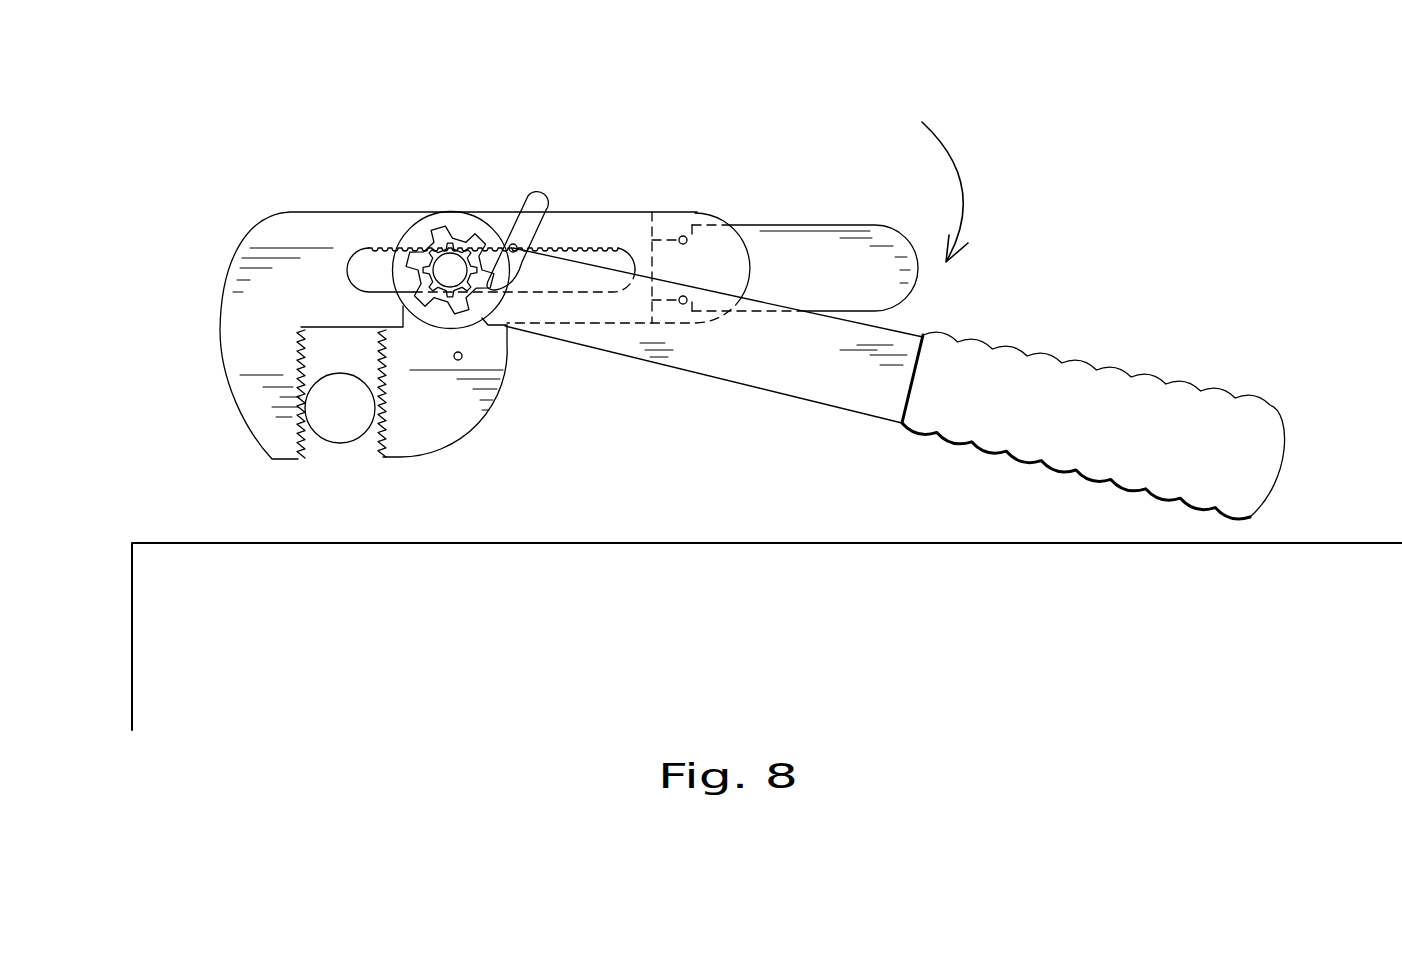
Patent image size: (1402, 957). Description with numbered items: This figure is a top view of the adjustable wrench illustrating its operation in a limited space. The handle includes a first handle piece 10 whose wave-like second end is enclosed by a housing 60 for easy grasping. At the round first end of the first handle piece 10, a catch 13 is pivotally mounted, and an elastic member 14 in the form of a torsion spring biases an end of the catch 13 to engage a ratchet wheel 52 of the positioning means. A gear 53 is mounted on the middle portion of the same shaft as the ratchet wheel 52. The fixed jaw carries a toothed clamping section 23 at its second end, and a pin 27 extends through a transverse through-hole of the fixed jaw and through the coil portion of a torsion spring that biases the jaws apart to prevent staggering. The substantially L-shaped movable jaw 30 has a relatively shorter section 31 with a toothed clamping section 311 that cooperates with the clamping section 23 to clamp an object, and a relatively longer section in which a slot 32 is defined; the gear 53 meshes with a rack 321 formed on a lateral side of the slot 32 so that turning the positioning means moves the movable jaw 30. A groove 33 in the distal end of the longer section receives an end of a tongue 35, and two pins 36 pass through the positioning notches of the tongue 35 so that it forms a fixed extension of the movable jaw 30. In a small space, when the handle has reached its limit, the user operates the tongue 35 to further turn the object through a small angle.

The first handle piece 10 is at (843, 393).
The catch 13 is at (537, 197).
The elastic member 14 is at (517, 257).
The clamping section 23 is at (383, 430).
The pin 27 is at (462, 360).
The movable jaw 30 is at (737, 180).
The relatively shorter section 31 is at (222, 300).
The clamping section 311 is at (296, 432).
The slot 32 is at (624, 245).
The rack 321 is at (582, 208).
The groove 33 is at (692, 313).
The tongue 35 is at (869, 240).
The pins 36 is at (682, 236).
The ratchet wheel 52 is at (436, 228).
The gear 53 is at (386, 212).
The housing 60 is at (1063, 372).